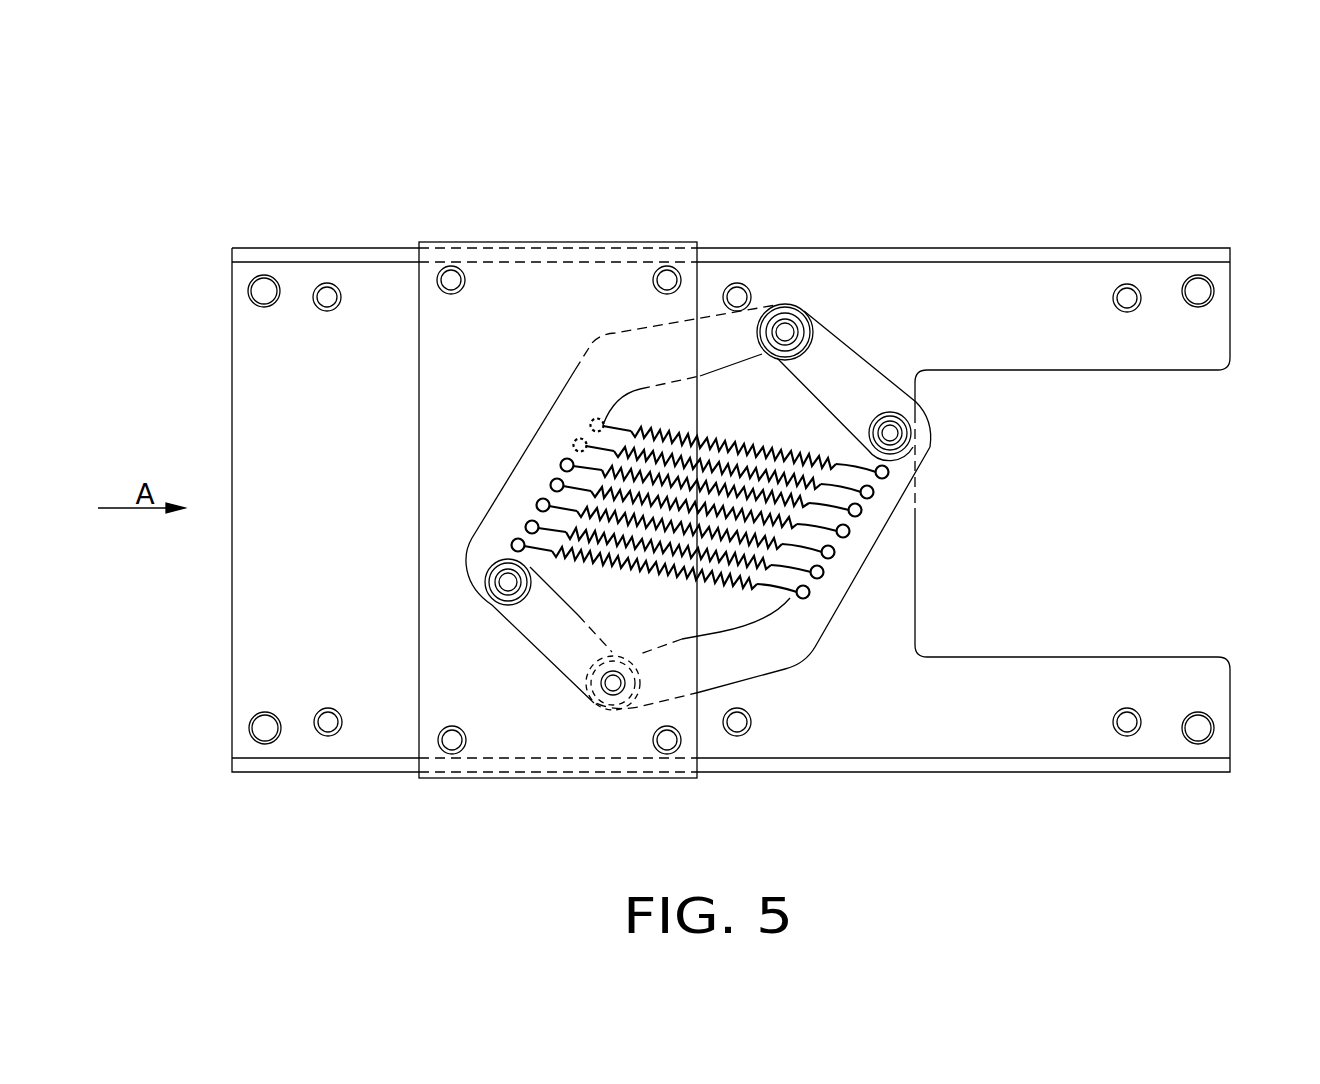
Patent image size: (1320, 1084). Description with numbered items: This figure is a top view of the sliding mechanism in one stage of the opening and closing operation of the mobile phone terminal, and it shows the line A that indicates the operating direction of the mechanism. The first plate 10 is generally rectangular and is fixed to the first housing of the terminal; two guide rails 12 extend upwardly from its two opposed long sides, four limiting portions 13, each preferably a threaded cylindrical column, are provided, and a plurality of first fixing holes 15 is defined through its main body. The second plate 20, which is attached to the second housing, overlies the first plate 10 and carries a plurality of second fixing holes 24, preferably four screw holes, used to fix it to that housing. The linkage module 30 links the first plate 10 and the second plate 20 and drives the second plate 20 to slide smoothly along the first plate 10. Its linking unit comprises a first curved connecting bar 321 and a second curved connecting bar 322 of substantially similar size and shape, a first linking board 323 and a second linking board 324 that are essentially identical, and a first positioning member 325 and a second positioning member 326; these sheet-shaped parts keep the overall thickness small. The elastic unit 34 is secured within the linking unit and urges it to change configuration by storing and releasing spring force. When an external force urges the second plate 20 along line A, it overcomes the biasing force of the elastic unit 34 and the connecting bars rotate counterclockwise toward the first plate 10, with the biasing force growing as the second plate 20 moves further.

The first plate 10 is at (1029, 308).
The guide rails 12 is at (325, 294).
The limiting portions 13 is at (262, 294).
The first fixing holes 15 is at (735, 292).
The second plate 20 is at (607, 293).
The second fixing holes 24 is at (448, 283).
The linkage module 30 is at (858, 392).
The first curved connecting bar 321 is at (556, 445).
The second curved connecting bar 322 is at (780, 654).
The first linking board 323 is at (829, 365).
The second linking board 324 is at (542, 618).
The first positioning member 325 is at (783, 330).
The second positioning member 326 is at (621, 692).
The elastic unit 34 is at (795, 527).